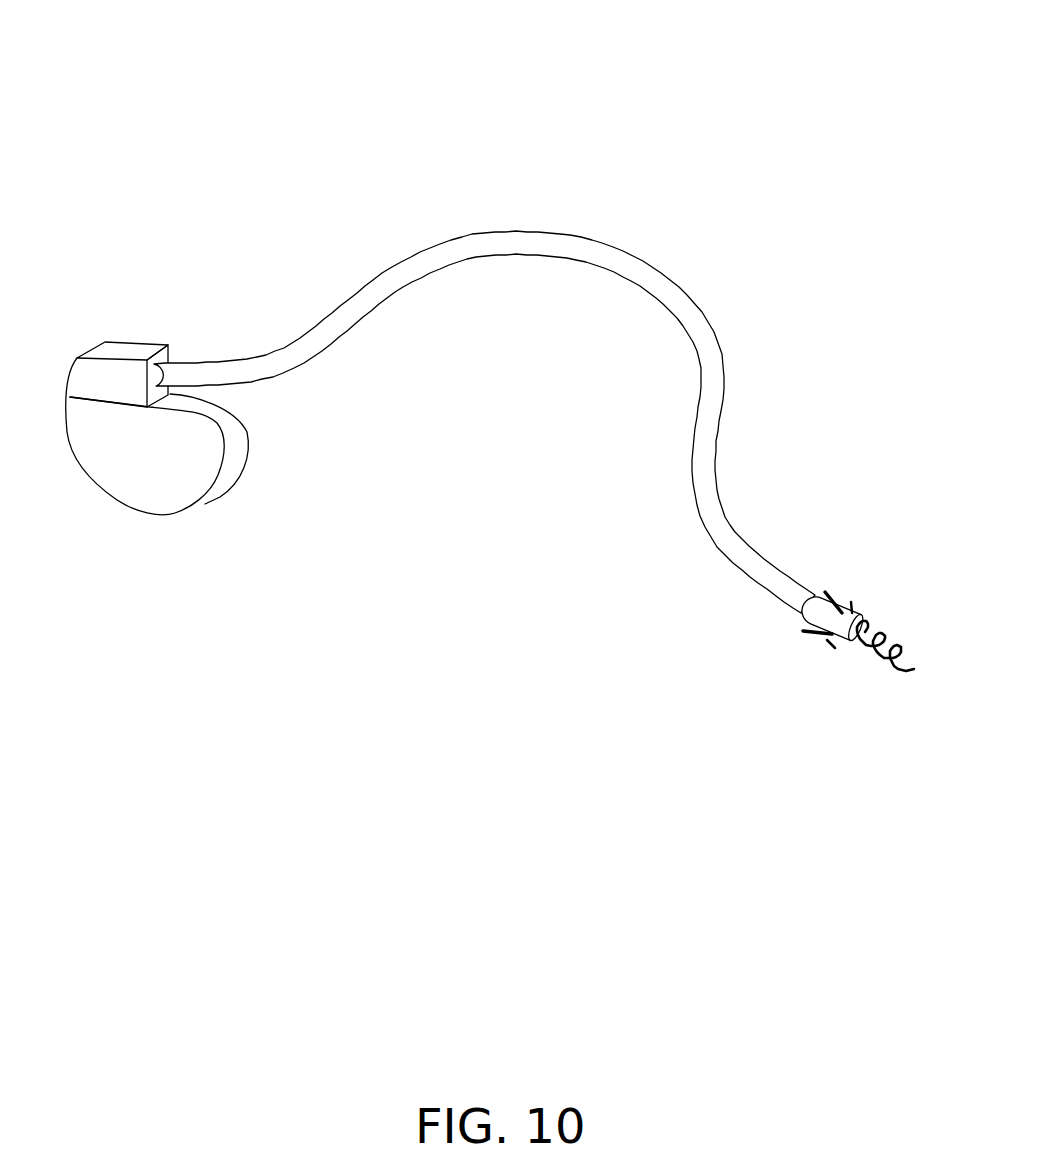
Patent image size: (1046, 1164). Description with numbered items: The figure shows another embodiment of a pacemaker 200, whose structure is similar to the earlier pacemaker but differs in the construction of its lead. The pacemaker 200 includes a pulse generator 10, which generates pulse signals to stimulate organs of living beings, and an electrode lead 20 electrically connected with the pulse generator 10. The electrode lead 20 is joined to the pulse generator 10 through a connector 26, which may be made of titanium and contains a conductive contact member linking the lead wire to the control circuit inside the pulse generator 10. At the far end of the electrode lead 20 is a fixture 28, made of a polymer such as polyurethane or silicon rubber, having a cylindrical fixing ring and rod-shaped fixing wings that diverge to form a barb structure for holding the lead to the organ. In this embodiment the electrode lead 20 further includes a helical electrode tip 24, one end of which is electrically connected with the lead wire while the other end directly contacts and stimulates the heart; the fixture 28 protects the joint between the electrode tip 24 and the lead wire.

The pacemaker 200 is at (456, 36).
The pulse generator 10 is at (160, 540).
The electrode lead 20 is at (532, 286).
The electrode tip 24 is at (880, 666).
The connector 26 is at (132, 393).
The fixture 28 is at (815, 617).